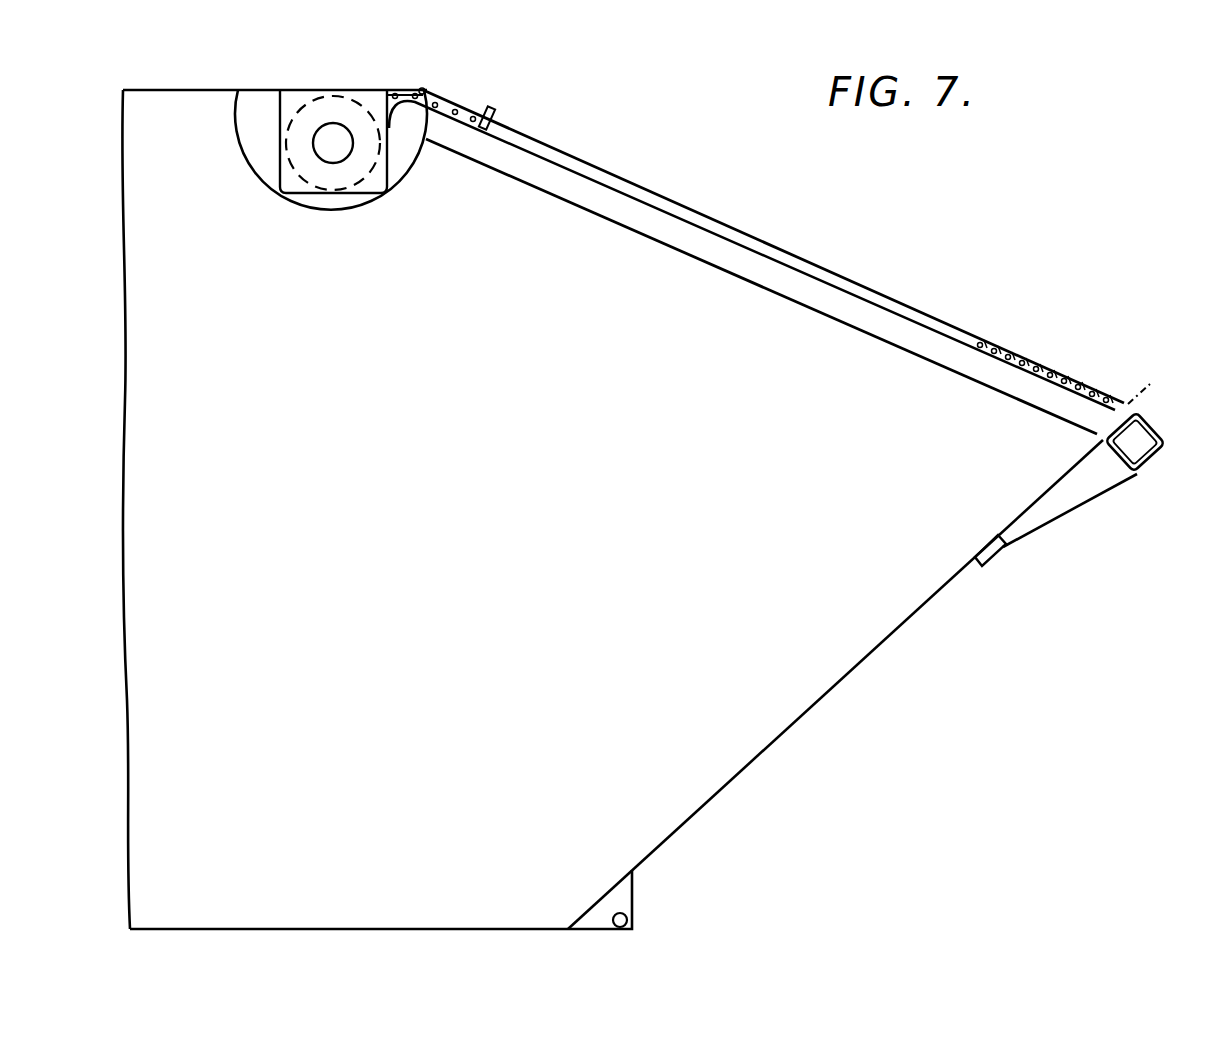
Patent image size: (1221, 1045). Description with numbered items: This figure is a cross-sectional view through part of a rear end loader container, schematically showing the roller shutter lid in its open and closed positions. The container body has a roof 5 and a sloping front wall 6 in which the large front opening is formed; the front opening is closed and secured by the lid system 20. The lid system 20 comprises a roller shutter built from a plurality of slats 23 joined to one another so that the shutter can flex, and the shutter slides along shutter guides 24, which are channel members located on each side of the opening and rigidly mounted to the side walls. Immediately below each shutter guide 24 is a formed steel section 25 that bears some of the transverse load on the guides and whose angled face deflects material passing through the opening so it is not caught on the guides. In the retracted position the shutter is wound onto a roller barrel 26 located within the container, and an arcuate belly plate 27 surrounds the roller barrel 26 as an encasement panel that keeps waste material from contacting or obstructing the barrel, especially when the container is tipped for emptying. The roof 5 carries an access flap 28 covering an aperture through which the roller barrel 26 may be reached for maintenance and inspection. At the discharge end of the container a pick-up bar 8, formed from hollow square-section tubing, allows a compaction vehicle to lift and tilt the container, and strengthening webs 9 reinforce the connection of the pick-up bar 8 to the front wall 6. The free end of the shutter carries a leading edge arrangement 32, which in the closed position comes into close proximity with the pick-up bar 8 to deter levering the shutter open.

The roof 5 is at (156, 84).
The front wall 6 is at (836, 695).
The pick-up bar 8 is at (1166, 441).
The strengthening webs 9 is at (1060, 502).
The lid system 20 is at (606, 297).
The slats 23 is at (1035, 360).
The shutter guides 24 is at (723, 232).
The formed steel section 25 is at (750, 270).
The roller barrel 26 is at (325, 146).
The arcuate belly plate 27 is at (314, 210).
The access flap 28 is at (305, 88).
The leading edge arrangement 32 is at (505, 109).